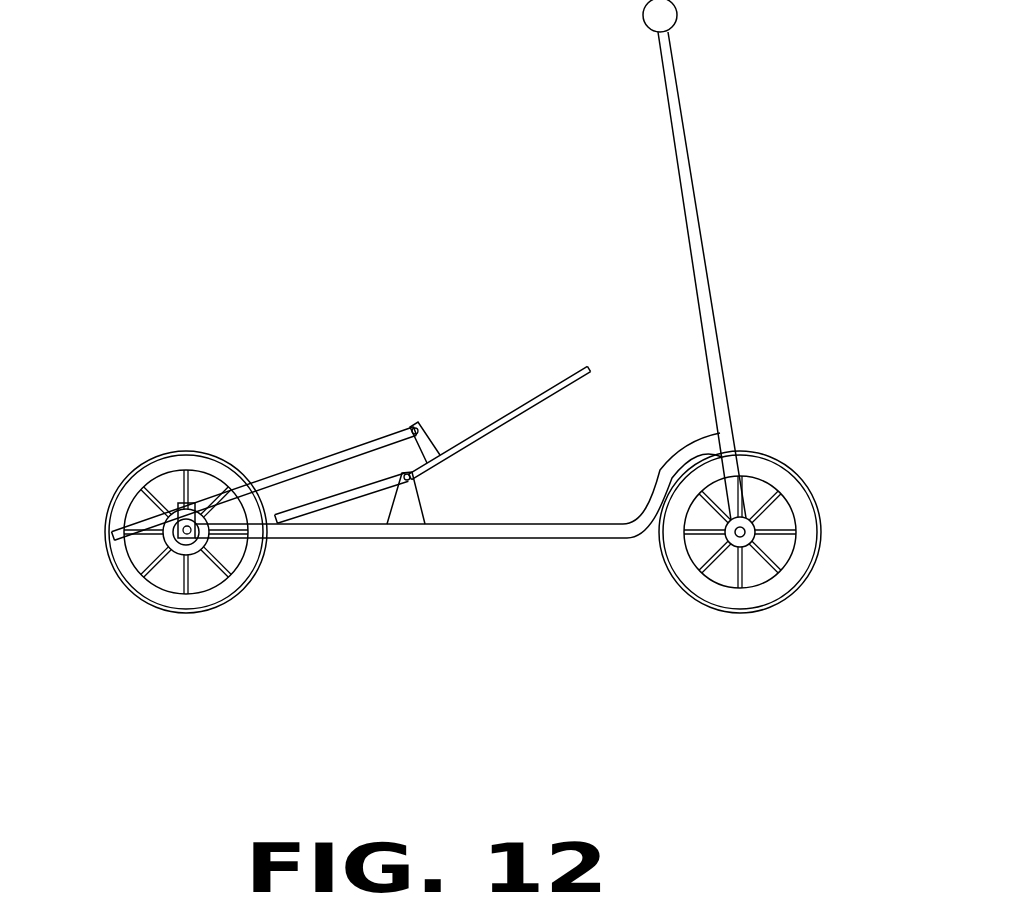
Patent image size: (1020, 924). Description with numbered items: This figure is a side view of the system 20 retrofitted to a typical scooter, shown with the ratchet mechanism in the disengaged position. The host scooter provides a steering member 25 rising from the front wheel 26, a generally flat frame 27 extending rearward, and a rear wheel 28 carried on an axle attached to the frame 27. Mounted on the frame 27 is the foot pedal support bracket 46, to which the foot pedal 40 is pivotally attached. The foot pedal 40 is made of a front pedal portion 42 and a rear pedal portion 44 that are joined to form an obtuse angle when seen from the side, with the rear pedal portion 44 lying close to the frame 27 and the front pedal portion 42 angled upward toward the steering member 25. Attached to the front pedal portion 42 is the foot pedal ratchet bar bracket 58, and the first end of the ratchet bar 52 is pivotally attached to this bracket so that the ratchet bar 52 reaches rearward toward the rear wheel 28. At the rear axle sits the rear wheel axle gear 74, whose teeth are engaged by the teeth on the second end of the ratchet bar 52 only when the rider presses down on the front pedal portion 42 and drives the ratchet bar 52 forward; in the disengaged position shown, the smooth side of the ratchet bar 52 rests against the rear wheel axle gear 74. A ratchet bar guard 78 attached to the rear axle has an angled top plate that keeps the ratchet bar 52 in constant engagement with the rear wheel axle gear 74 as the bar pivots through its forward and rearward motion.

The system 20 is at (352, 390).
The steering member 25 is at (700, 255).
The front wheel 26 is at (785, 458).
The frame 27 is at (572, 538).
The rear wheel 28 is at (150, 463).
The foot pedal 40 is at (524, 380).
The front pedal portion 42 is at (525, 412).
The rear pedal portion 44 is at (322, 510).
The foot pedal support bracket 46 is at (407, 507).
The ratchet bar 52 is at (277, 476).
The foot pedal ratchet bar bracket 58 is at (432, 452).
The rear wheel axle gear 74 is at (192, 550).
The ratchet bar guard 78 is at (162, 526).